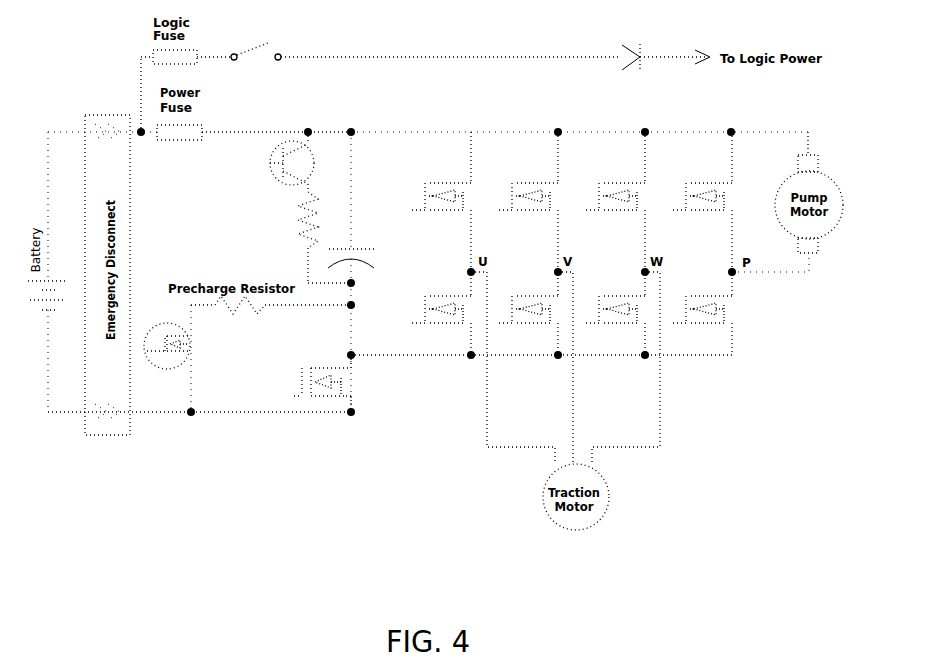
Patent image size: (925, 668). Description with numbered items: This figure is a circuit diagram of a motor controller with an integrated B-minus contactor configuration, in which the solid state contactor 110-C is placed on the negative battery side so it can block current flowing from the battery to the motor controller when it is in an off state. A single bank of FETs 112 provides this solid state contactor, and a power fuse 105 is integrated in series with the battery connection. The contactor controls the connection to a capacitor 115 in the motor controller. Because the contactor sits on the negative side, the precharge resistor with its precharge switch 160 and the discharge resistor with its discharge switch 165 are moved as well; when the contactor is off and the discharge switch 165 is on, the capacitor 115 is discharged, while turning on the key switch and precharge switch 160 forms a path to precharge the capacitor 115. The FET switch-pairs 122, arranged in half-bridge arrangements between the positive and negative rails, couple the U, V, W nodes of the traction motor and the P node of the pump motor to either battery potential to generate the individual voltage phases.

The power fuse 105 is at (240, 72).
The discharge switch 165 is at (275, 207).
The capacitor 115 is at (366, 272).
The precharge switch 160 is at (155, 321).
The FETs 112 is at (283, 358).
The solid state contactor 110-C is at (374, 384).
The switch-pairs 122 is at (587, 243).